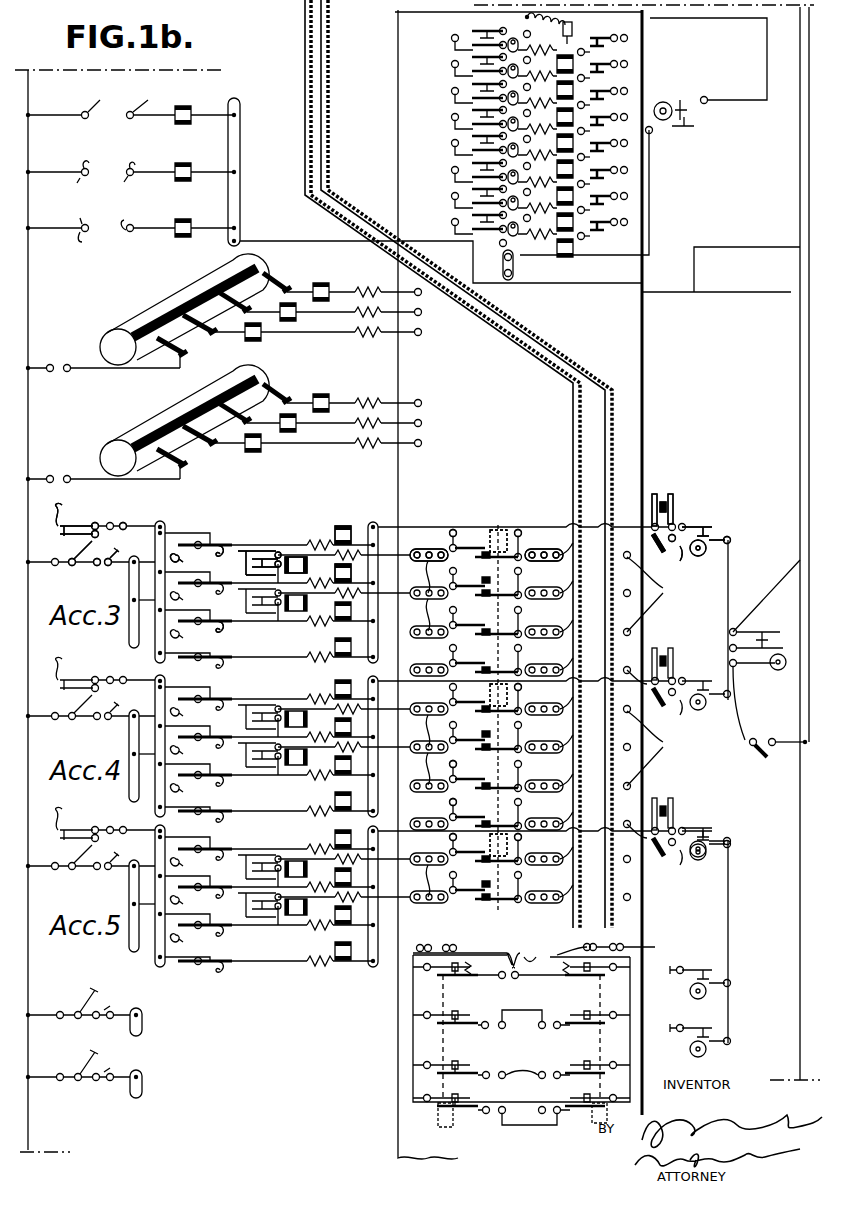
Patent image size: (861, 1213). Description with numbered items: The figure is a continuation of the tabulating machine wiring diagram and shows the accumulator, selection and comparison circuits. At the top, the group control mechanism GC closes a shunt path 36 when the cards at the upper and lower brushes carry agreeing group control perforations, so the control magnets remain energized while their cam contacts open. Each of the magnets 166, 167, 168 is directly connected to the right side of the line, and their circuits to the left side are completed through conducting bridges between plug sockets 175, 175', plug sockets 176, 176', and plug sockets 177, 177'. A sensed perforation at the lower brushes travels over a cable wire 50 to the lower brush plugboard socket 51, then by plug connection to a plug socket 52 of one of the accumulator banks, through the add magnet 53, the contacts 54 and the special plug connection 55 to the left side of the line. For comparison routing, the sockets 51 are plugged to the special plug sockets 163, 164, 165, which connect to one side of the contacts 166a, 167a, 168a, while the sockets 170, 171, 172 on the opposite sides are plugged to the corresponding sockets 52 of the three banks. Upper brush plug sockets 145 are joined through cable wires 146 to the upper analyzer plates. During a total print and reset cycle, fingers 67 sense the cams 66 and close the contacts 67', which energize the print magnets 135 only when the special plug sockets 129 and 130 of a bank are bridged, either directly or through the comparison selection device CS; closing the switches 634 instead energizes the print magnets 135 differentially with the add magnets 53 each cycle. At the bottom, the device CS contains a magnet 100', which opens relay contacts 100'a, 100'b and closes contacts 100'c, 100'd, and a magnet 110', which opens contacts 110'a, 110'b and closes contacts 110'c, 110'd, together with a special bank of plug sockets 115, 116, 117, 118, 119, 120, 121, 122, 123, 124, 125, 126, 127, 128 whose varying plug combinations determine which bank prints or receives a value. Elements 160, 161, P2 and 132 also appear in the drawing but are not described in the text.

The plug socket 175 is at (151, 102).
The plug socket 175' is at (76, 102).
The plug socket 176 is at (148, 183).
The plug socket 176' is at (61, 183).
The plug socket 177 is at (148, 242).
The plug socket 177' is at (61, 241).
The magnet 166 is at (488, 533).
The magnet 167 is at (490, 700).
The magnet 168 is at (493, 850).
The cable wire 50 is at (573, 448).
The cable wires 146 is at (612, 472).
The shunt path 36 is at (709, 294).
The group control mechanism GC is at (581, 146).
The special plug socket 130 is at (108, 826).
The special plug socket 129 is at (126, 829).
The special plug connection 55 is at (112, 860).
The contact 161 is at (95, 875).
The contact 160 is at (97, 896).
The fingers 67 is at (200, 697).
The cams 66 is at (180, 850).
The contacts 54 is at (237, 868).
The add magnet 53 is at (298, 864).
The print magnets 135 is at (342, 875).
The contacts 67' is at (244, 787).
The plug socket 52 is at (433, 887).
The lower brush plugboard socket 51 is at (540, 887).
The socket 170 is at (453, 532).
The special plug socket 163 is at (520, 533).
The contacts 166a is at (475, 560).
The switches 634 is at (683, 862).
The upper brush plug sockets 145 is at (665, 671).
The special plug socket 164 is at (523, 690).
The contacts 167a is at (475, 714).
The socket 171 is at (470, 806).
The socket 172 is at (453, 855).
The special plug socket 165 is at (523, 840).
The contacts 168a is at (475, 864).
The relay P2 is at (770, 645).
The comparison selection device CS is at (501, 1139).
The plug socket 116 is at (420, 947).
The cable 132 is at (400, 1000).
The plug socket 115 is at (450, 943).
The plug socket 119 is at (485, 941).
The plug socket 120 is at (535, 970).
The plug socket 122 is at (492, 966).
The relay contacts 110'a is at (477, 990).
The plug socket 121 is at (533, 977).
The relay contacts 100'a is at (565, 990).
The relay contacts 110'b is at (485, 1005).
The relay contacts 100'b is at (555, 1005).
The plug socket 124 is at (497, 1027).
The plug socket 123 is at (540, 1027).
The relay contacts 110'c is at (500, 1056).
The relay contacts 100'c is at (562, 1054).
The plug socket 126 is at (522, 1069).
The plug socket 125 is at (512, 1089).
The plug socket 127 is at (525, 1107).
The plug socket 128 is at (517, 1119).
The magnet 110' is at (427, 1135).
The relay contacts 110'd is at (469, 1141).
The magnet 100' is at (585, 1137).
The plug socket 118 is at (591, 947).
The plug socket 117 is at (625, 950).
The relay contacts 100'd is at (641, 1081).